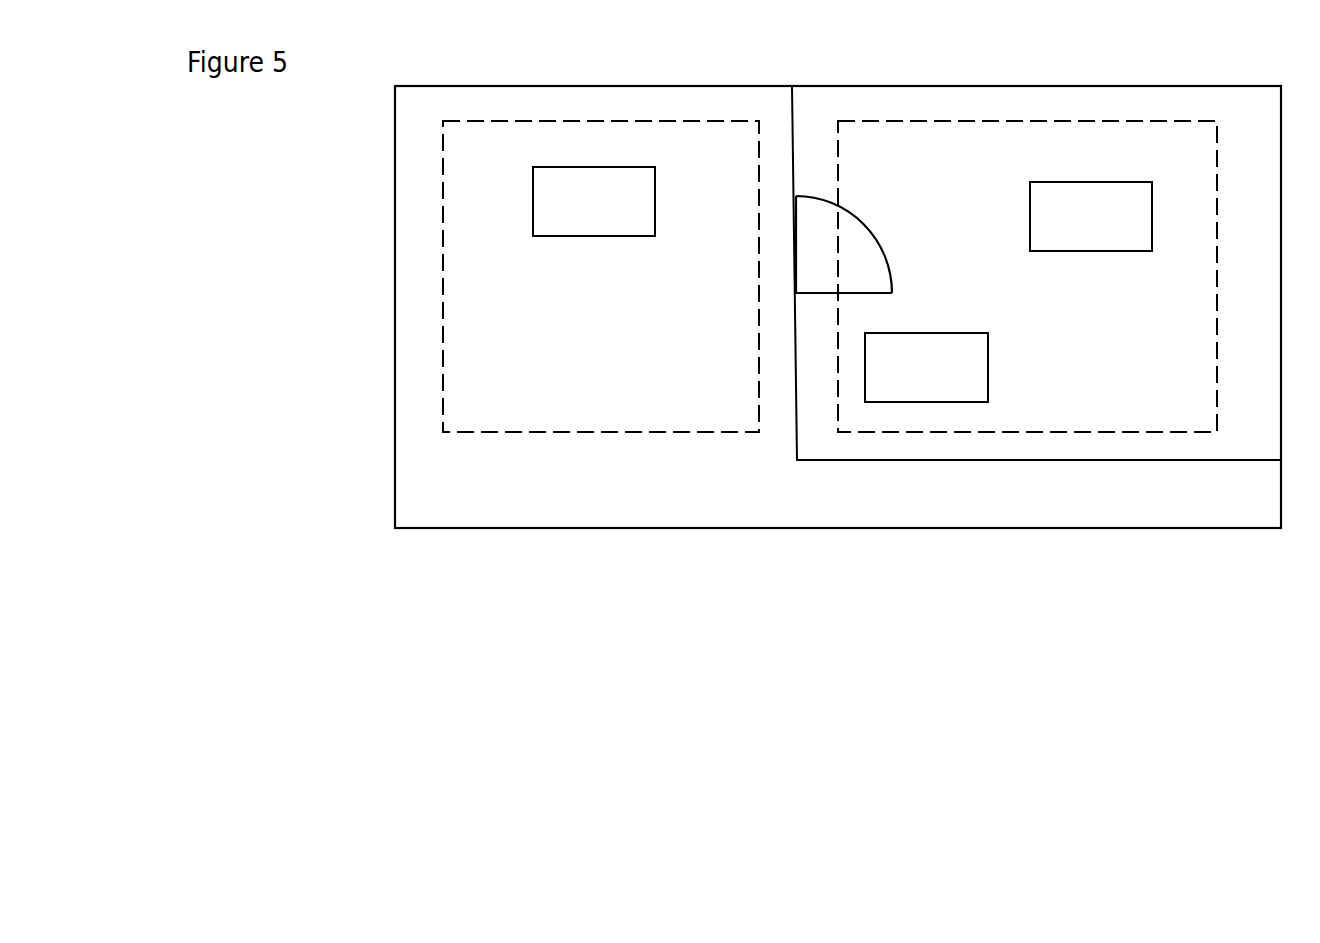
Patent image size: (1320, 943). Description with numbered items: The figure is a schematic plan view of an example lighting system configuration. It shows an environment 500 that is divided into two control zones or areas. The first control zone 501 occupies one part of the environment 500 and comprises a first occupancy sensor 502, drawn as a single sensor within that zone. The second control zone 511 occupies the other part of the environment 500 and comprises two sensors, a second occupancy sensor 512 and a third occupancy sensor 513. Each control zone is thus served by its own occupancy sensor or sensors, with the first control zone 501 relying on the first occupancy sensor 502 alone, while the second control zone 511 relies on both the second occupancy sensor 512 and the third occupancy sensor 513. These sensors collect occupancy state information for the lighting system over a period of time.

The environment 500 is at (838, 528).
The first control zone 501 is at (511, 121).
The first occupancy sensor 502 is at (655, 200).
The second control zone 511 is at (1100, 121).
The second occupancy sensor 512 is at (988, 367).
The third occupancy sensor 513 is at (1100, 182).